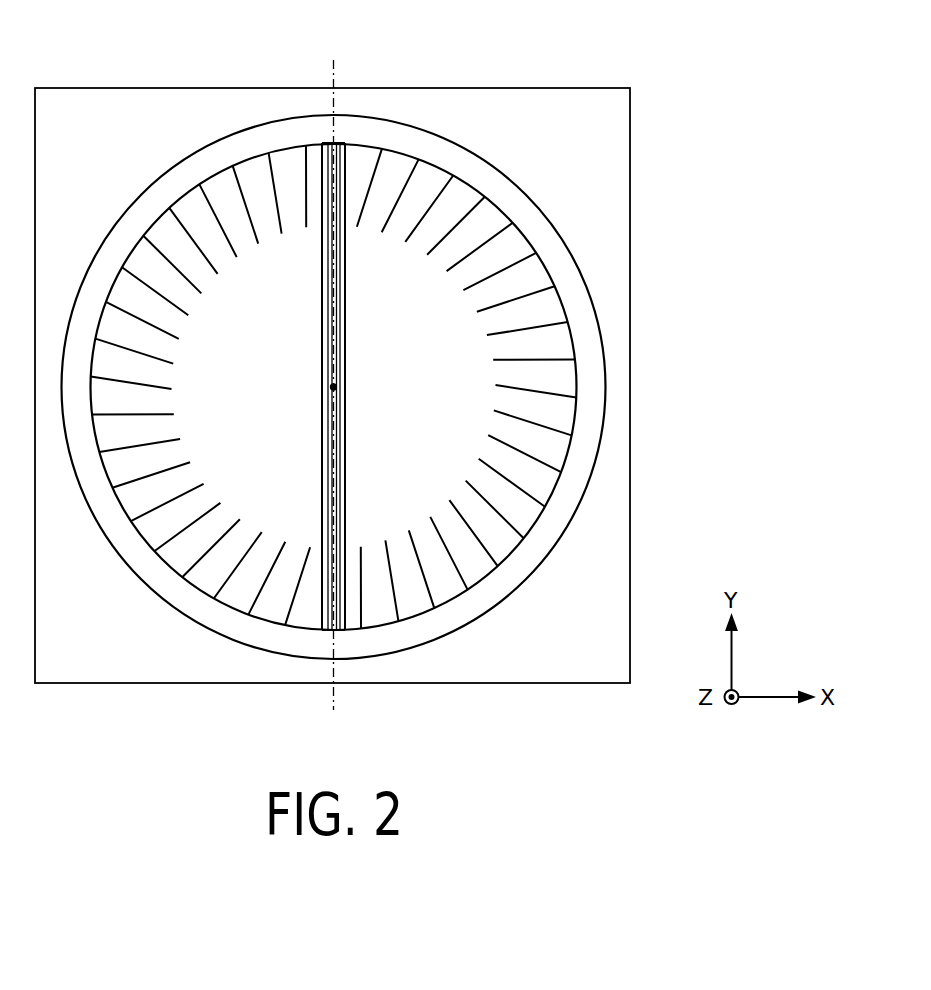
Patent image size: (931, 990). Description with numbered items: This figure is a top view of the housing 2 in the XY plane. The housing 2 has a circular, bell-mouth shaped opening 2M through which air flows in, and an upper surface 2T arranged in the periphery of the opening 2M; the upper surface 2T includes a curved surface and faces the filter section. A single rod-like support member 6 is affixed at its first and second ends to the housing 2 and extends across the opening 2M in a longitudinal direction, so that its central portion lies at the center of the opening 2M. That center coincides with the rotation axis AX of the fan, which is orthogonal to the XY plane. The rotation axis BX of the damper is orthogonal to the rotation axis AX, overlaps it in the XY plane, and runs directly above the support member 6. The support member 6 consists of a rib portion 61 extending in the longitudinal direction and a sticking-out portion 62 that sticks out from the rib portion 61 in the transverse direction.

The housing 2 is at (630, 178).
The upper surface 2T is at (432, 150).
The opening 2M is at (176, 210).
The support member 6 is at (345, 302).
The rib portion 61 is at (336, 330).
The sticking-out portion 62 is at (345, 354).
The rotation axis of the fan AX is at (337, 392).
The rotation axis of the damper BX is at (336, 63).